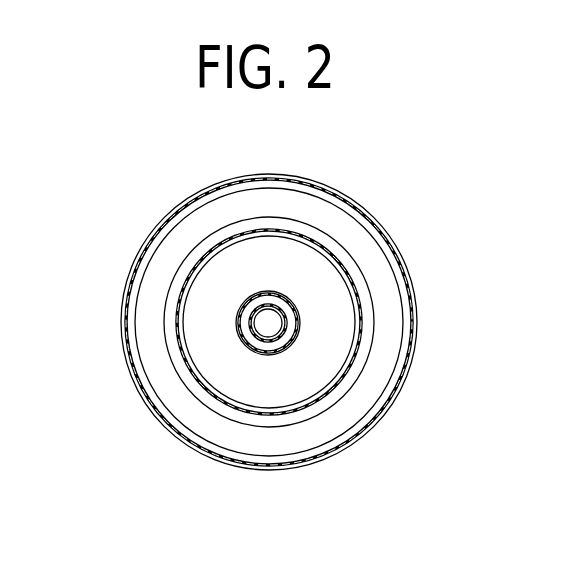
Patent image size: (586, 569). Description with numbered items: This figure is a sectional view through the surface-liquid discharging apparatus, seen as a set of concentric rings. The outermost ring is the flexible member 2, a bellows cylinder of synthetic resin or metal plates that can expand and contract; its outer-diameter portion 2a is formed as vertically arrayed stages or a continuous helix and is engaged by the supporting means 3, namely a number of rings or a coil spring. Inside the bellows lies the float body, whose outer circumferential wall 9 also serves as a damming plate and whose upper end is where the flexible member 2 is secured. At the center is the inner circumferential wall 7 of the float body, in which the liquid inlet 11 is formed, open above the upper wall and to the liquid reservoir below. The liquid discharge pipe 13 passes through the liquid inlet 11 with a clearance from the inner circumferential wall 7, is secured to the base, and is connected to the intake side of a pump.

The flexible member 2 is at (380, 275).
The outer-diameter portion 2a is at (137, 261).
The supporting means 3 is at (126, 305).
The inner circumferential wall 7 is at (244, 343).
The outer circumferential wall 9 is at (358, 356).
The liquid inlet 11 is at (288, 340).
The liquid discharge pipe 13 is at (270, 340).